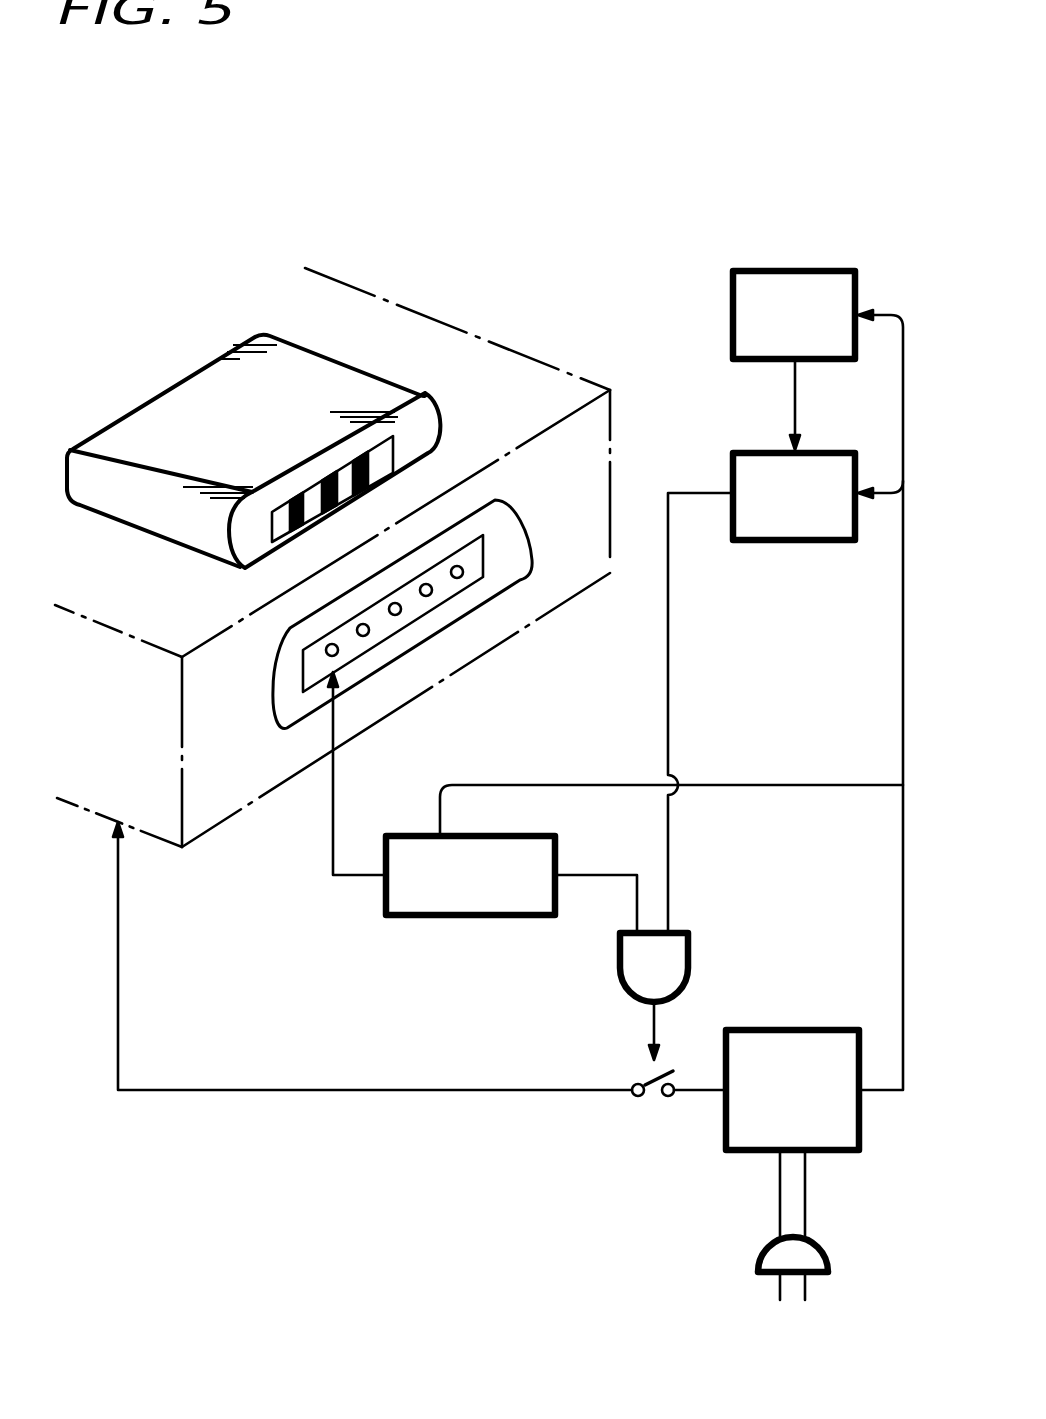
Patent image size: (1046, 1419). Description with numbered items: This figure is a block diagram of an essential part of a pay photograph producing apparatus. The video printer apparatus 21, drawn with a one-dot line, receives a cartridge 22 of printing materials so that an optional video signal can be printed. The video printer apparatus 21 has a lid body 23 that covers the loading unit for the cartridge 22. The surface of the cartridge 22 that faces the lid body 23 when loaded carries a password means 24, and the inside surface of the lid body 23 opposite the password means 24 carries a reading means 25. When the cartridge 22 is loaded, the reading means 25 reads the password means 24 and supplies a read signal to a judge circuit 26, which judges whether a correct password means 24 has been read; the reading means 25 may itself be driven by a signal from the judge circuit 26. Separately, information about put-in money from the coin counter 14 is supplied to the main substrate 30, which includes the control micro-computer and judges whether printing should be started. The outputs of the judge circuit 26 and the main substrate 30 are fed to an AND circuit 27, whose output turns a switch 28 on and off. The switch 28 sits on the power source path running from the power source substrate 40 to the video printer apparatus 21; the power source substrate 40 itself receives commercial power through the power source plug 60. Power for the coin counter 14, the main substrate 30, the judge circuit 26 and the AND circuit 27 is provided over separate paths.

The coin counter 14 is at (796, 268).
The video printer apparatus 21 is at (425, 330).
The cartridge 22 is at (313, 350).
The lid body 23 is at (513, 532).
The password means 24 is at (395, 455).
The reading means 25 is at (473, 570).
The judge circuit 26 is at (432, 918).
The AND circuit 27 is at (688, 955).
The switch 28 is at (653, 1100).
The main substrate 30 is at (800, 543).
The power source substrate 40 is at (785, 1027).
The power source plug 60 is at (758, 1255).